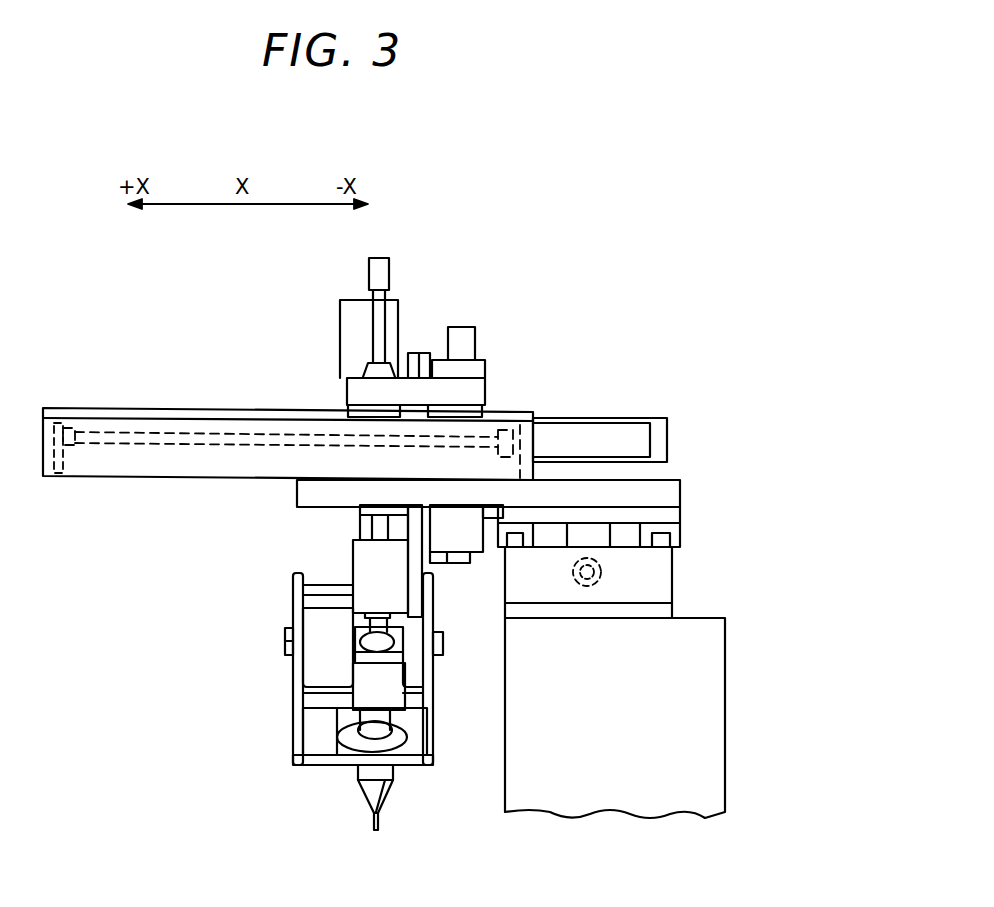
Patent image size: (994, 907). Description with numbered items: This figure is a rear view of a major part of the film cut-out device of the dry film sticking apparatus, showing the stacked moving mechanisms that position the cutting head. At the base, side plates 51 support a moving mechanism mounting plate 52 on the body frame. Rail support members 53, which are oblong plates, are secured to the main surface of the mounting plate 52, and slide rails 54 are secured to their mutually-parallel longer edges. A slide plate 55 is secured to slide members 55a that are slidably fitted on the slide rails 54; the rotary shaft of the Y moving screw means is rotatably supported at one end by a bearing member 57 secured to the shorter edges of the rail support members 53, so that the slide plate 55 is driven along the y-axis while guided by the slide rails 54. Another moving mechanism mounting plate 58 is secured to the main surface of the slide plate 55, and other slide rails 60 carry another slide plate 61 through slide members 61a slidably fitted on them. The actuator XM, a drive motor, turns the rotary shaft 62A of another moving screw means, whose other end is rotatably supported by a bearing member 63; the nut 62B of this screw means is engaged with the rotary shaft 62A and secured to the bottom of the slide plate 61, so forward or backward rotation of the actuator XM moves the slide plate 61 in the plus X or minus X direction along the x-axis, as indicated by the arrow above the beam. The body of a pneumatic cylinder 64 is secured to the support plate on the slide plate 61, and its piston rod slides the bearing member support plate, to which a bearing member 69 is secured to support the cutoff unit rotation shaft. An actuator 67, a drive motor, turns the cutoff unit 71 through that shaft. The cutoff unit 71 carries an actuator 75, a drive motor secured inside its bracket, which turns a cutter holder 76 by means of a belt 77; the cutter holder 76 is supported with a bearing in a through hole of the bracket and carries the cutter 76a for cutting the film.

The side plates 51 is at (712, 748).
The moving mechanism mounting plate 52 is at (662, 612).
The rail support members 53 is at (666, 592).
The slide rails 54 is at (676, 548).
The slide plate 55 is at (682, 518).
The slide members 55a is at (690, 537).
The bearing member 57 is at (595, 583).
The moving mechanism mounting plate 58 is at (682, 494).
The slide rails 60 is at (135, 408).
The slide plate 61 is at (480, 385).
The slide members 61a is at (478, 410).
The rotary shaft 62A is at (218, 432).
The nut 62B is at (318, 456).
The bearing member 63 is at (60, 452).
The pneumatic cylinder 64 is at (460, 335).
The actuator 67 is at (352, 318).
The bearing member 69 is at (365, 556).
The cutoff unit 71 is at (292, 601).
The actuator 75 is at (322, 730).
The cutter holder 76 is at (395, 775).
The cutter 76a is at (379, 830).
The belt 77 is at (405, 736).
The actuator XM is at (668, 440).